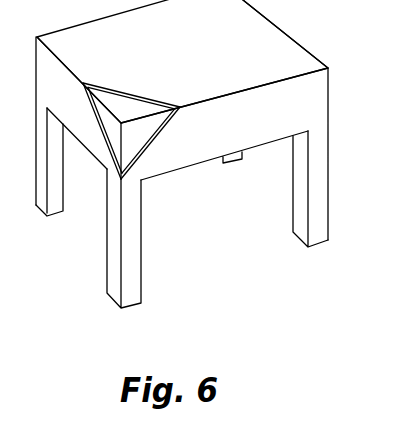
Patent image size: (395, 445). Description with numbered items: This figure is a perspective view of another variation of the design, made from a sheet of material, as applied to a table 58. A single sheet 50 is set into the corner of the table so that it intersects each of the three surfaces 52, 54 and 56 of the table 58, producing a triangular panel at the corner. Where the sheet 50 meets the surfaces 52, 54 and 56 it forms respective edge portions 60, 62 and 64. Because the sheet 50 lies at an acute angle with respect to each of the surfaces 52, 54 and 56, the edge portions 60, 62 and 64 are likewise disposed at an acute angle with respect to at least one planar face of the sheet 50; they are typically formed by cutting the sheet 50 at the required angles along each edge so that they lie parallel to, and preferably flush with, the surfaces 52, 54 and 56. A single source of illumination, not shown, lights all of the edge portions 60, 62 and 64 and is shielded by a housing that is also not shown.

The sheet 50 is at (134, 121).
The surface 52 is at (219, 48).
The surface 54 is at (282, 128).
The surface 56 is at (64, 86).
The table 58 is at (292, 35).
The edge portion 60 is at (134, 94).
The edge portion 62 is at (147, 150).
The edge portion 64 is at (101, 133).